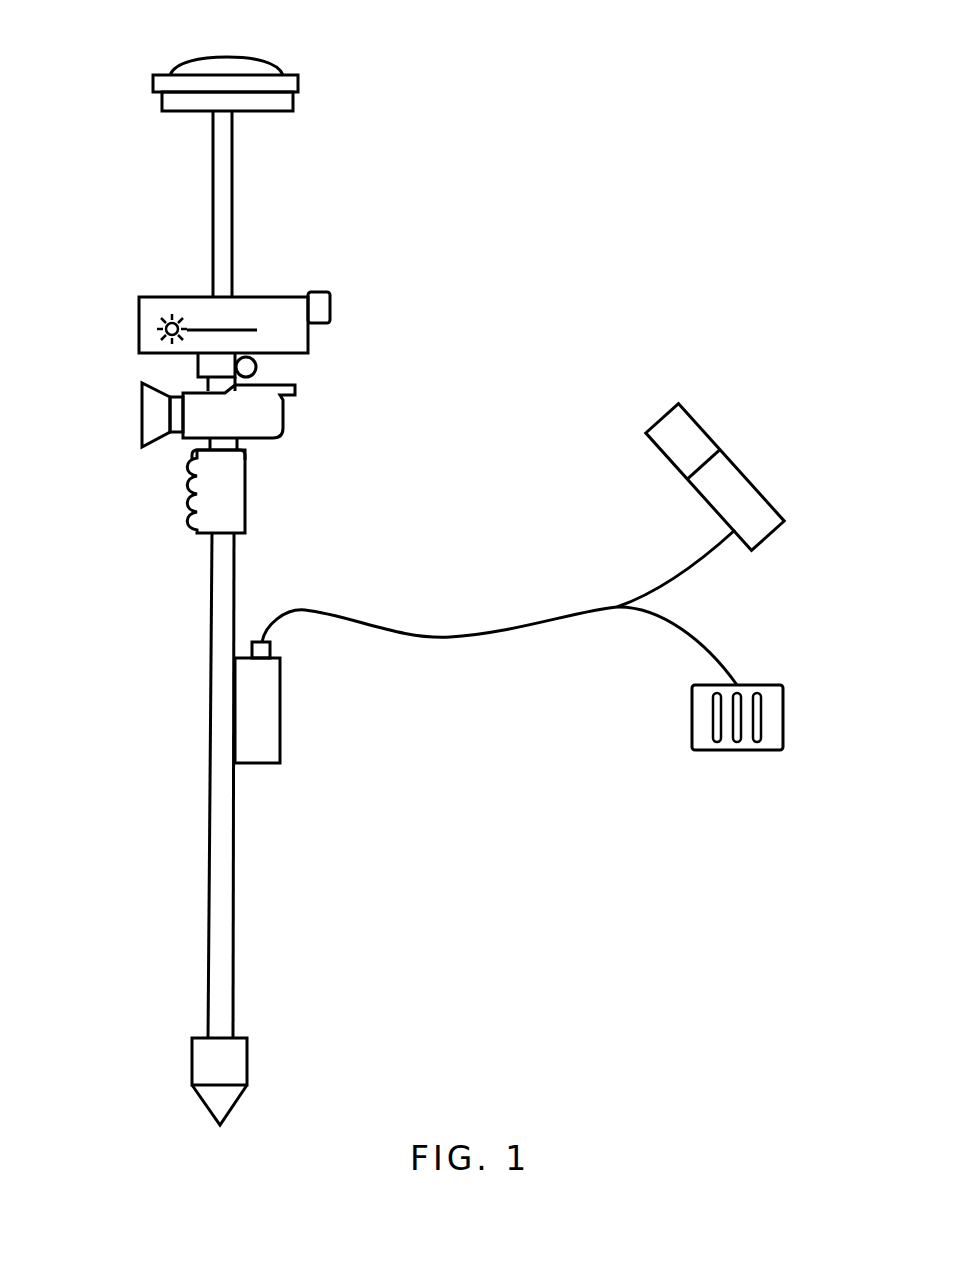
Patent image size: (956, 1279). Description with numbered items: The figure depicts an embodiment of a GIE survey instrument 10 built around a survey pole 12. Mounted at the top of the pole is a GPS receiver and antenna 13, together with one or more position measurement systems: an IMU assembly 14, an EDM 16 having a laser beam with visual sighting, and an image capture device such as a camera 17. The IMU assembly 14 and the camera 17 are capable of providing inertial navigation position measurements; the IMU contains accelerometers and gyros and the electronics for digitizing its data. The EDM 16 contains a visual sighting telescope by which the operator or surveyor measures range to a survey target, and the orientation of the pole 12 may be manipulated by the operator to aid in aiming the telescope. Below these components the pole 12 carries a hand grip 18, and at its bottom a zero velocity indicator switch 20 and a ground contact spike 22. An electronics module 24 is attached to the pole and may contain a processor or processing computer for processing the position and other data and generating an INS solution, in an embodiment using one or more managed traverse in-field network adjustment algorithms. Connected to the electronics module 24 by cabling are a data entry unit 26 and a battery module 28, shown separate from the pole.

The GIE survey instrument 10 is at (140, 172).
The survey pole 12 is at (233, 182).
The GPS receiver and antenna 13 is at (245, 58).
The IMU assembly 14 is at (310, 100).
The EDM 16 is at (308, 333).
The camera 17 is at (288, 412).
The hand grip 18 is at (246, 508).
The zero velocity indicator switch 20 is at (249, 1055).
The ground contact spike 22 is at (222, 1125).
The electronics module 24 is at (282, 733).
The data entry unit 26 is at (752, 487).
The battery module 28 is at (784, 737).